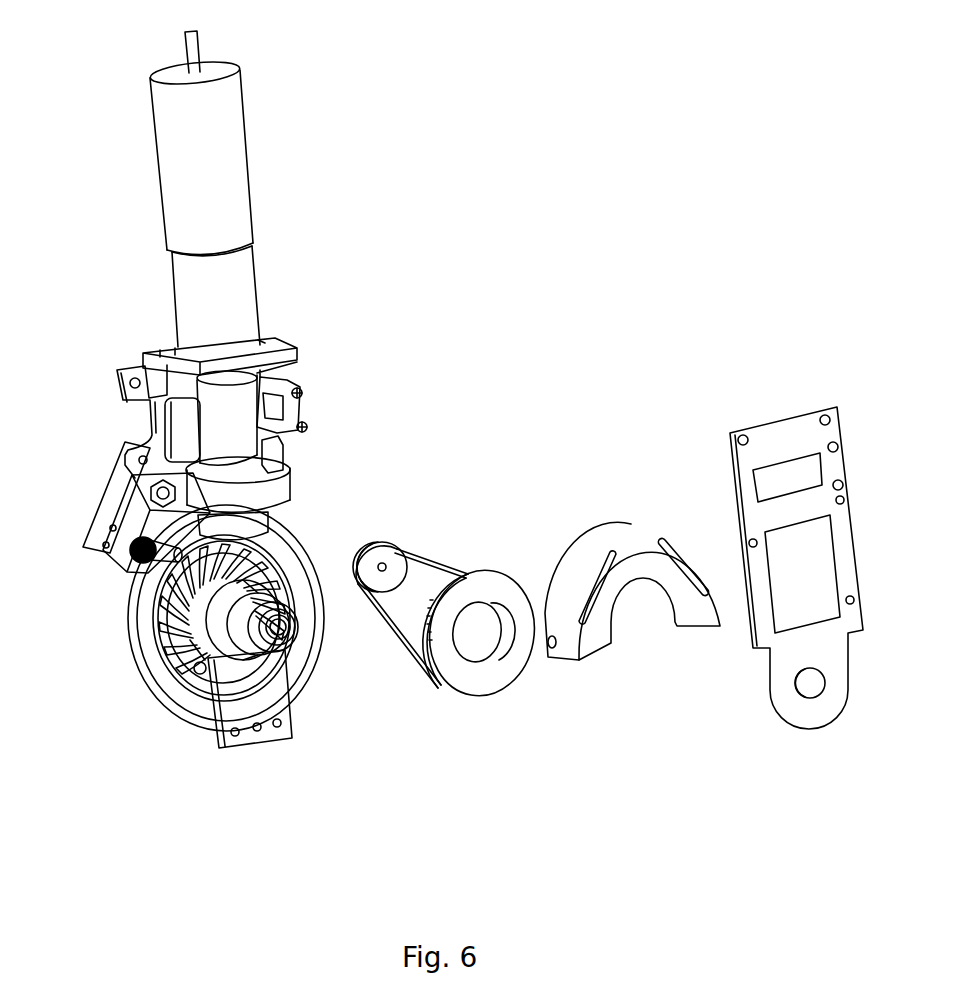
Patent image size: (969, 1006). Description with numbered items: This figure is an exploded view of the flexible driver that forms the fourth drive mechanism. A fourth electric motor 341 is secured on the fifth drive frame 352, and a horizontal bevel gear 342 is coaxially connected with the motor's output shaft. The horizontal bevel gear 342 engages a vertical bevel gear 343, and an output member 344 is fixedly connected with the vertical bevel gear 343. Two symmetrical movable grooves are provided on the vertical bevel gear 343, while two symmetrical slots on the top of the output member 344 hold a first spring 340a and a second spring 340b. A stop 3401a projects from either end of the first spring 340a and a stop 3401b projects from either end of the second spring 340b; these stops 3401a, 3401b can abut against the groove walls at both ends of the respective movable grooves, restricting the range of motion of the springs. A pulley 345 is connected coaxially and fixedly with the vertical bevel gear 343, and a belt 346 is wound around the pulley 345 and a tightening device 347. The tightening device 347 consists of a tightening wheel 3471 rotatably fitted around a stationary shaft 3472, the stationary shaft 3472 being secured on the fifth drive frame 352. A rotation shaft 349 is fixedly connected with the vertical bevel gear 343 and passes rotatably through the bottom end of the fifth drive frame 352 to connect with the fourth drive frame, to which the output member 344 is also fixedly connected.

The fourth electric motor 341 is at (185, 193).
The horizontal bevel gear 342 is at (287, 498).
The vertical bevel gear 343 is at (197, 713).
The output member 344 is at (250, 738).
The pulley 345 is at (478, 570).
The belt 346 is at (423, 627).
The tightening device 347 is at (117, 575).
The rotation shaft 349 is at (280, 627).
The fifth drive frame 352 is at (820, 712).
The first spring 340a is at (207, 547).
The second spring 340b is at (312, 560).
The stop 3401a is at (187, 650).
The stop 3401b is at (290, 542).
The tightening wheel 3471 is at (400, 547).
The stationary shaft 3472 is at (137, 598).